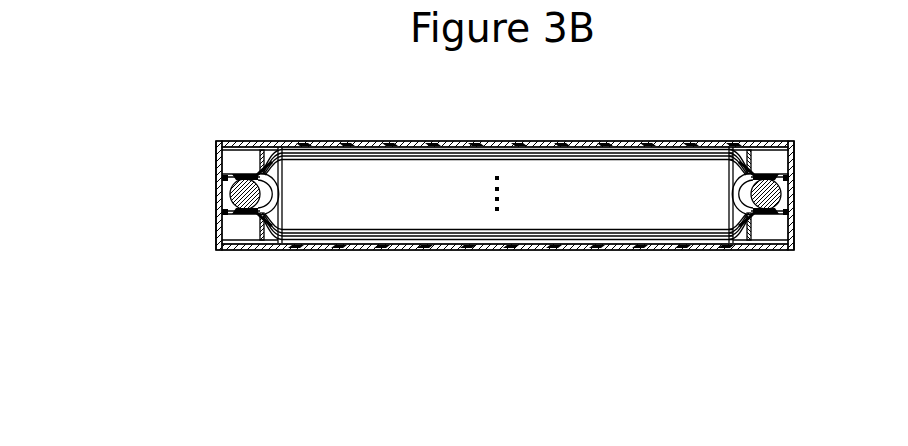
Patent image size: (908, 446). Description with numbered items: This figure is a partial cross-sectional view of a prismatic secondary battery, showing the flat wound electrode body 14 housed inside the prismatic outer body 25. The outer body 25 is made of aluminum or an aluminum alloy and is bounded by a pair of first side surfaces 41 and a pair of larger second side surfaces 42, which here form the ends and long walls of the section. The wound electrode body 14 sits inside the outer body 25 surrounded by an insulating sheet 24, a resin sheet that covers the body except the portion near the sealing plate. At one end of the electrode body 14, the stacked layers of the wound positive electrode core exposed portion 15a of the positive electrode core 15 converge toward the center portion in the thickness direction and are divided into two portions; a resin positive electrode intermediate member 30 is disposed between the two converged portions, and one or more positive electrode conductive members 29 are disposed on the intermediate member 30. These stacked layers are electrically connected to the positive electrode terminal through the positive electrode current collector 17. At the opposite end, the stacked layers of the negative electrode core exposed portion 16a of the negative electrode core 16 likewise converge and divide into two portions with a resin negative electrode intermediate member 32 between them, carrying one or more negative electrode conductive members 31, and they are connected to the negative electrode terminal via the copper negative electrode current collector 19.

The flat wound electrode body 14 is at (635, 170).
The positive electrode core 15 is at (742, 212).
The positive electrode core exposed portion 15a is at (737, 178).
The negative electrode core 16 is at (278, 210).
The negative electrode core exposed portion 16a is at (277, 182).
The positive electrode current collector 17 is at (780, 158).
The negative electrode current collector 19 is at (232, 168).
The insulating sheet 24 is at (447, 141).
The prismatic outer body 25 is at (402, 141).
The positive electrode conductive member 29 is at (787, 180).
The positive electrode intermediate member 30 is at (787, 193).
The negative electrode conductive member 31 is at (222, 178).
The negative electrode intermediate member 32 is at (232, 192).
The first side surface 41 is at (218, 220).
The second side surface 42 is at (502, 141).